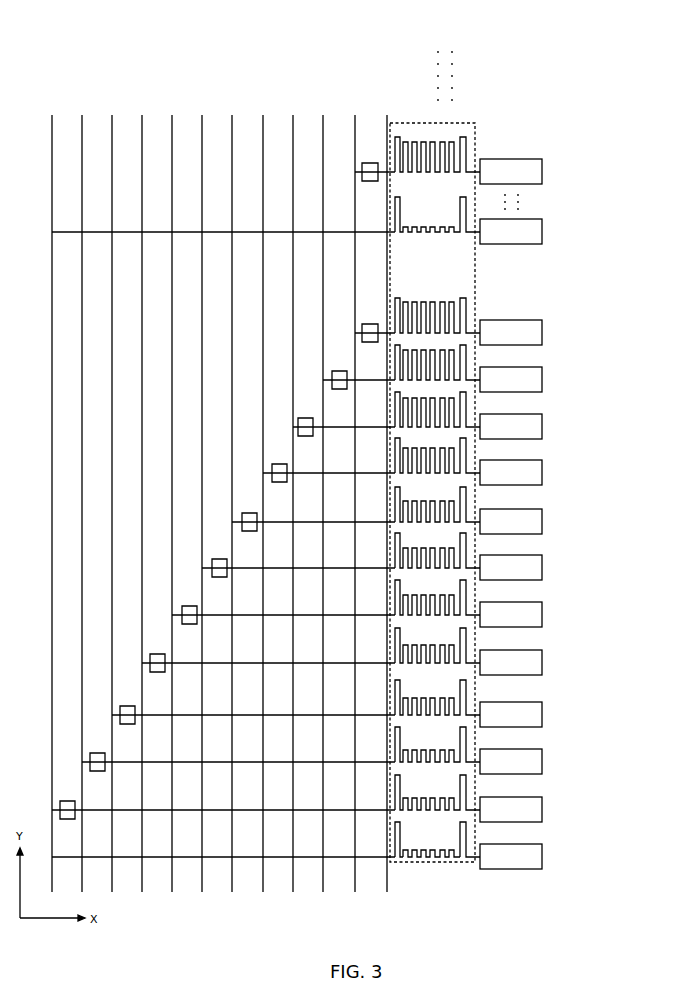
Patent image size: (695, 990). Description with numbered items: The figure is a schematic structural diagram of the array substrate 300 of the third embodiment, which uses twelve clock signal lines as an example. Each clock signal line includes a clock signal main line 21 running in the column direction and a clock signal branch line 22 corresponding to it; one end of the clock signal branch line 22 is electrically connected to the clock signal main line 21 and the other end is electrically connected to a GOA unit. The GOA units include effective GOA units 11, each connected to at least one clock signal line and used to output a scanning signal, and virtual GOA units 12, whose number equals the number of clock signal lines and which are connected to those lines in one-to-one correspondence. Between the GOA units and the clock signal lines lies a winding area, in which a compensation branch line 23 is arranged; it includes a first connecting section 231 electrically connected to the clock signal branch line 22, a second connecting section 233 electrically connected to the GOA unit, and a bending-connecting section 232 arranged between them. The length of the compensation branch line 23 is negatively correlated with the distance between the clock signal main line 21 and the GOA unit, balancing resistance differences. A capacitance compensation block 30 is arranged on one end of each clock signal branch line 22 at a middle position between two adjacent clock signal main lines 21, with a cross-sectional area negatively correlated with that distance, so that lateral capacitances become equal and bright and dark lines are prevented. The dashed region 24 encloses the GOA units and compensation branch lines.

The array substrate 300 is at (100, 33).
The touch electrode region 24 is at (467, 122).
The effective GOA unit 11 is at (531, 173).
The virtual GOA unit 12 is at (537, 341).
The clock signal main line 21 is at (52, 655).
The clock signal branch line 22 is at (296, 862).
The capacitance compensation block 30 is at (100, 770).
The compensation branch line 23 is at (468, 904).
The first connecting section 231 is at (397, 862).
The bending-connecting section 232 is at (432, 862).
The second connecting section 233 is at (464, 862).